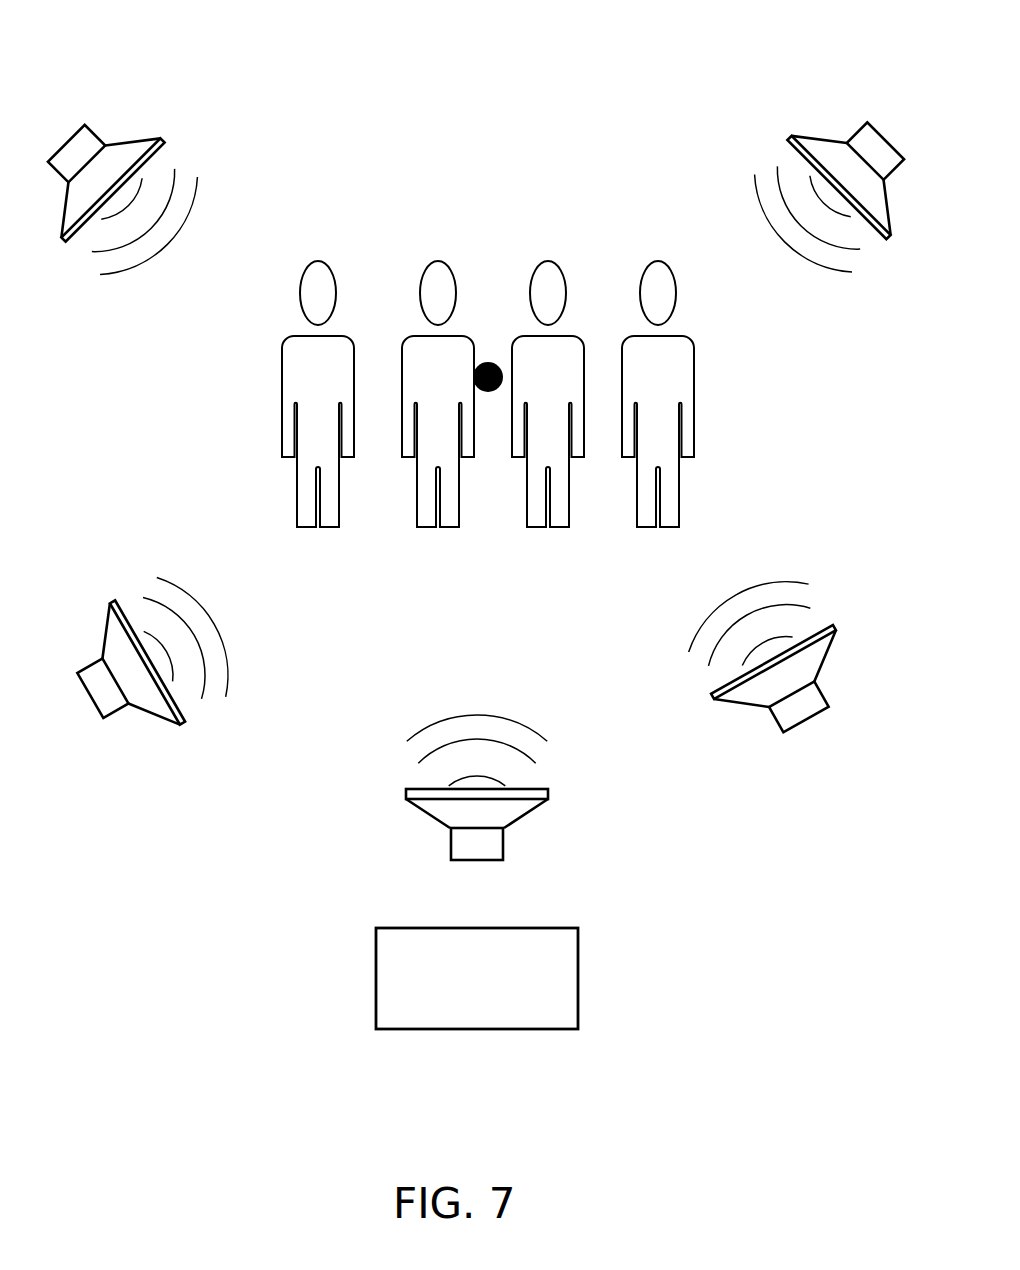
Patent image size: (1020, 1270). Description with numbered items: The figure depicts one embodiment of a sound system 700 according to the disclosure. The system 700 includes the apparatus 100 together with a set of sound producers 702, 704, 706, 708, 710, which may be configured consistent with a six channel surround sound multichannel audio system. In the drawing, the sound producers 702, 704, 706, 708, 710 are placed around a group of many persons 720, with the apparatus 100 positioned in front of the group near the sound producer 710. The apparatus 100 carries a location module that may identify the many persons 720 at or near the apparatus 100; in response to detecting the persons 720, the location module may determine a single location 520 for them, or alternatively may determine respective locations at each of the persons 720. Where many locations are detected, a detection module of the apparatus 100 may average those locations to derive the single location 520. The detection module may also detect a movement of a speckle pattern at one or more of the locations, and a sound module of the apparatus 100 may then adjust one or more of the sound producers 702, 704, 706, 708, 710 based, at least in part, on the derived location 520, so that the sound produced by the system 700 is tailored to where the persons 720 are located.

The system 700 is at (138, 72).
The sound producer 702 is at (67, 137).
The sound producer 704 is at (868, 130).
The sound producer 706 is at (106, 716).
The sound producer 708 is at (784, 734).
The sound producer 710 is at (445, 826).
The persons 720 is at (467, 228).
The single location 520 is at (502, 364).
The apparatus 100 is at (458, 1002).